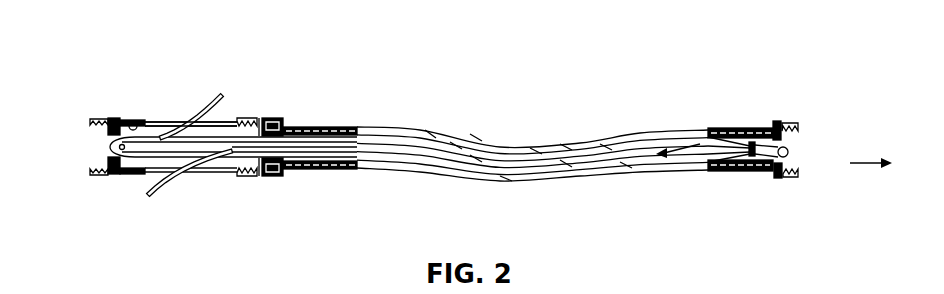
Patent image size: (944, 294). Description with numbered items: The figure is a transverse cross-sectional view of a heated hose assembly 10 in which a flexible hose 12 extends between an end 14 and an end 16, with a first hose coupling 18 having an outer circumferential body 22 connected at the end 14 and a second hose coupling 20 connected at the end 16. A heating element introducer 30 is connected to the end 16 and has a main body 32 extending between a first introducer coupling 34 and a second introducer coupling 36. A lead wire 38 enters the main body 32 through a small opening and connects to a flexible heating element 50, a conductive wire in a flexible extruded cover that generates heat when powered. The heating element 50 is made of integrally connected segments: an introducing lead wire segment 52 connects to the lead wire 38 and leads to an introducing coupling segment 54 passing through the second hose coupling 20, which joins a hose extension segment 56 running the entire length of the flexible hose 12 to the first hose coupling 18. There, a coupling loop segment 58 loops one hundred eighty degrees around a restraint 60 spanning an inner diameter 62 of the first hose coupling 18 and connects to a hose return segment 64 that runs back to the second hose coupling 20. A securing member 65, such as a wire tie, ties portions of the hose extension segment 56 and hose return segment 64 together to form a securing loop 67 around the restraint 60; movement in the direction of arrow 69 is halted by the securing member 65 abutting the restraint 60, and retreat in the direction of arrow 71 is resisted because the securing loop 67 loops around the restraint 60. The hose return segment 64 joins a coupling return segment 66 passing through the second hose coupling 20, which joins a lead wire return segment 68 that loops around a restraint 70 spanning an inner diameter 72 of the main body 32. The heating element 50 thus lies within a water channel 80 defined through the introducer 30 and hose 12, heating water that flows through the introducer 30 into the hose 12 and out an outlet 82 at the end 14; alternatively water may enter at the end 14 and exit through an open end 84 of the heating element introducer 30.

The heated hose assembly 10 is at (180, 12).
The flexible hose 12 is at (403, 126).
The end 14 is at (800, 138).
The end 16 is at (268, 178).
The first hose coupling 18 is at (782, 126).
The second hose coupling 20 is at (285, 124).
The outer circumferential body 22 is at (777, 180).
The heating element introducer 30 is at (168, 108).
The main body 32 is at (225, 120).
The first introducer coupling 34 is at (257, 118).
The second introducer coupling 36 is at (100, 118).
The lead wire 38 is at (162, 187).
The heating element 50 is at (220, 168).
The introducing lead wire segment 52 is at (243, 176).
The introducing coupling segment 54 is at (280, 176).
The hose extension segment 56 is at (423, 168).
The coupling loop segment 58 is at (778, 176).
The restraint 60 is at (790, 151).
The inner diameter 62 is at (797, 166).
The hose return segment 64 is at (653, 138).
The securing member 65 is at (752, 173).
The coupling return segment 66 is at (300, 128).
The securing loop 67 is at (767, 137).
The lead wire return segment 68 is at (196, 120).
The arrow 69 is at (867, 167).
The restraint 70 is at (123, 173).
The arrow 71 is at (688, 152).
The inner diameter 72 is at (144, 122).
The water channel 80 is at (548, 165).
The outlet 82 is at (793, 140).
The open end 84 is at (98, 146).